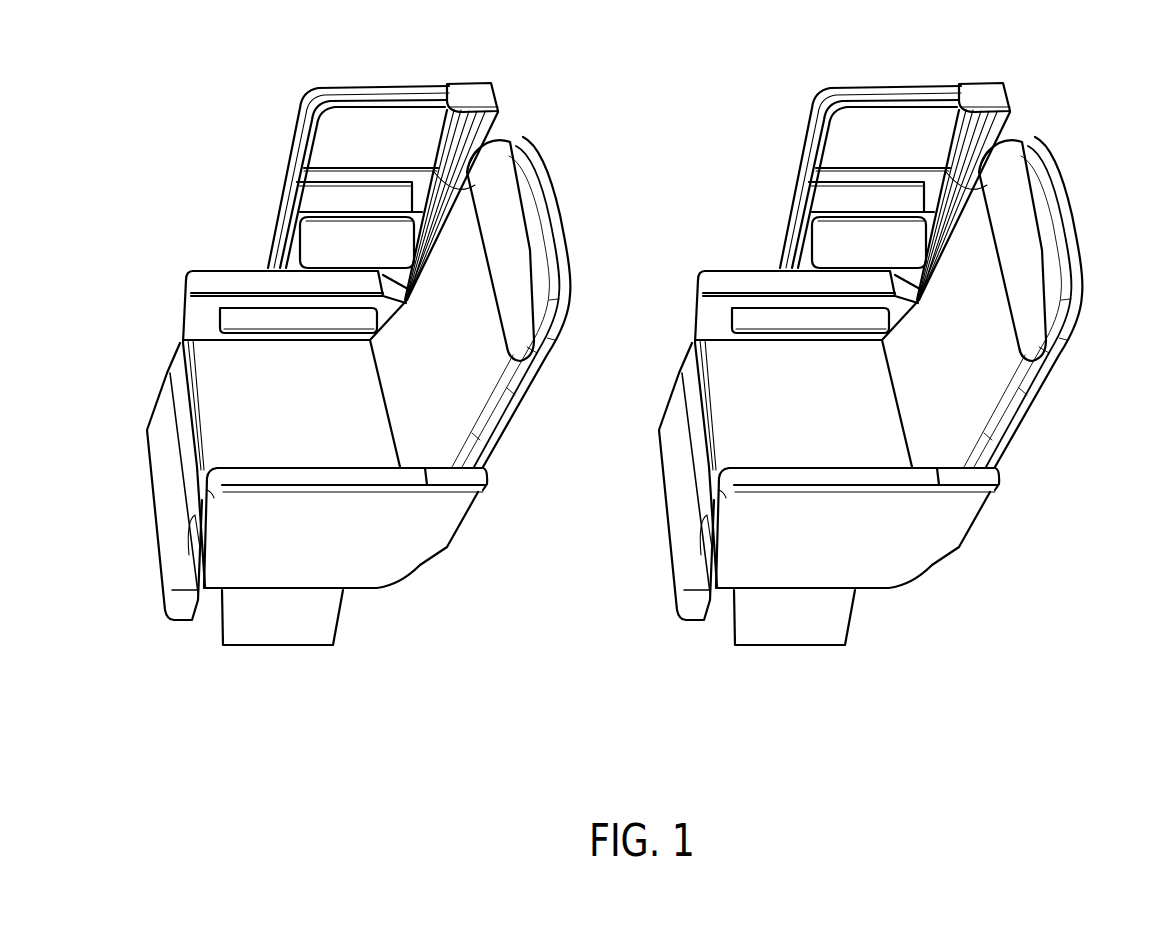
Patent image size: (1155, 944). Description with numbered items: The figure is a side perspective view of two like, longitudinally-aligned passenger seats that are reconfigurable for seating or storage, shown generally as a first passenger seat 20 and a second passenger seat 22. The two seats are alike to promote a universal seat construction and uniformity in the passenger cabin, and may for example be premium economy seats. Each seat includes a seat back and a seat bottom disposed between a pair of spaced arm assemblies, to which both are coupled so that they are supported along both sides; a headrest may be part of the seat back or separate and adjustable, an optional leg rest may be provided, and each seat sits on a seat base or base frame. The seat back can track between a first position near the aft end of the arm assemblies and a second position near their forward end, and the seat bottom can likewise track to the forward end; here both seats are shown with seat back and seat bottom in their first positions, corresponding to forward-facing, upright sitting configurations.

The first passenger seat 20 is at (518, 90).
The second passenger seat 22 is at (1035, 90).